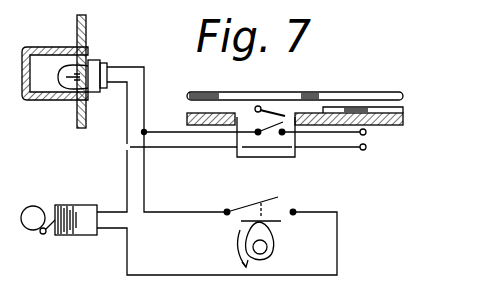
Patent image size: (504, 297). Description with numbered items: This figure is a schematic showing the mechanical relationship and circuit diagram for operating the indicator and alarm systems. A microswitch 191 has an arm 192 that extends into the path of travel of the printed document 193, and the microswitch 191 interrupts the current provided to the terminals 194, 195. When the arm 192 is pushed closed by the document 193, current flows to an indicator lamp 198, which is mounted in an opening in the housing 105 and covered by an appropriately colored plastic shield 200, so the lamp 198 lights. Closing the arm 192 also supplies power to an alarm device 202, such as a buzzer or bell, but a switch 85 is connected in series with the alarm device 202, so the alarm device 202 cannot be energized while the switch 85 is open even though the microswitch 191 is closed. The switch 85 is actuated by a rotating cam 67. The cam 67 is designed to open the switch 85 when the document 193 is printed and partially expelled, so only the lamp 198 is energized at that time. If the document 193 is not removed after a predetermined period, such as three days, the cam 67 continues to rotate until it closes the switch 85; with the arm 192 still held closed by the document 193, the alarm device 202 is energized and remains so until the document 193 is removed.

The plastic shield 200 is at (50, 50).
The housing 105 is at (87, 30).
The indicator lamp 198 is at (58, 76).
The arm 192 is at (269, 100).
The printed document 193 is at (398, 112).
The terminal 194 is at (367, 135).
The terminal 195 is at (366, 150).
The microswitch 191 is at (243, 150).
The switch 85 is at (249, 208).
The cam 67 is at (271, 237).
The alarm device 202 is at (78, 236).